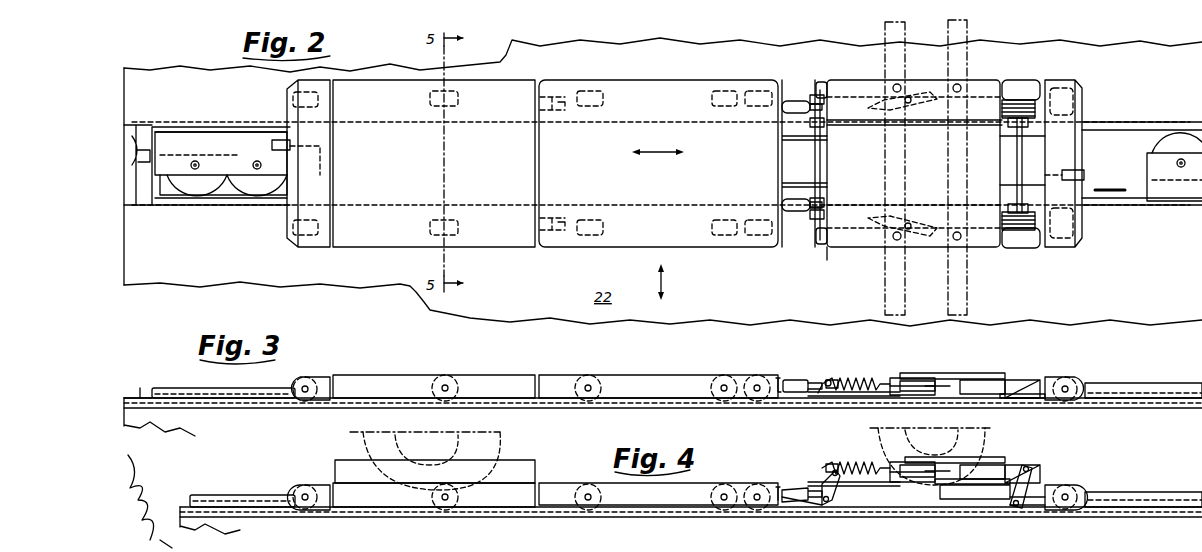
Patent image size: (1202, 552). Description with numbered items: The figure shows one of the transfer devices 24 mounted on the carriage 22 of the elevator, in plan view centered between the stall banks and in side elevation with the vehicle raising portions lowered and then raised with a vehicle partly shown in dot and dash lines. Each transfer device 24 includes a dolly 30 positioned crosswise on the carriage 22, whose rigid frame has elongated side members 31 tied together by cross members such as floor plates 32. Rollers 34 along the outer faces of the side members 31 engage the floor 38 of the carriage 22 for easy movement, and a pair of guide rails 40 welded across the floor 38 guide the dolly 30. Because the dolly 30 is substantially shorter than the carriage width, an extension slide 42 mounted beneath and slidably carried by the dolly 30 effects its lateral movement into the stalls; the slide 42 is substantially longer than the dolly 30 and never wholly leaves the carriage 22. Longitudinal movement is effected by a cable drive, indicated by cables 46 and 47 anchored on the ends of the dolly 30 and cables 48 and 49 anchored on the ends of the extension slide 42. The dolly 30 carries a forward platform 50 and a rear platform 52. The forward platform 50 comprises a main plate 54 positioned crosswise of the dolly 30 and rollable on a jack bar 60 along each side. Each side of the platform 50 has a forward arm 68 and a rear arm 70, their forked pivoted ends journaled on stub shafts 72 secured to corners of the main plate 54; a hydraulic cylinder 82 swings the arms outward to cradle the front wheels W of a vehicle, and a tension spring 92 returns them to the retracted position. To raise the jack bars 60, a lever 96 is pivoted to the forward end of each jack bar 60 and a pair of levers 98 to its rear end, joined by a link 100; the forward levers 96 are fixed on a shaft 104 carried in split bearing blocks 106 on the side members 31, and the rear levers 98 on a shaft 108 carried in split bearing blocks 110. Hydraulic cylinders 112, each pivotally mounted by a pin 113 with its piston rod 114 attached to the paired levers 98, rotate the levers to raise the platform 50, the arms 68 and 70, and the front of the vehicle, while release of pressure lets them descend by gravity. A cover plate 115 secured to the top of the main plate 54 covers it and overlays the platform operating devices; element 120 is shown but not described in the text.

In FIG. 2, the carriage 22 is at (162, 285).
In FIG. 3, the carriage 22 is at (162, 425).
In FIG. 2, the transfer device 24 is at (284, 254).
In FIG. 3, the transfer device 24 is at (367, 364).
In FIG. 4, the transfer device 24 is at (1122, 475).
In FIG. 2, the dolly 30 is at (312, 252).
In FIG. 3, the dolly 30 is at (672, 374).
In FIG. 4, the dolly 30 is at (577, 481).
In FIG. 2, the side member 31 is at (800, 127).
In FIG. 4, the side member 31 is at (1035, 505).
In FIG. 2, the floor plate 32 is at (300, 202).
In FIG. 3, the floor plate 32 is at (637, 377).
In FIG. 4, the floor plate 32 is at (668, 484).
In FIG. 2, the roller 34 is at (292, 100).
In FIG. 3, the roller 34 is at (312, 378).
In FIG. 4, the roller 34 is at (312, 487).
In FIG. 3, the floor 38 is at (226, 408).
In FIG. 4, the floor 38 is at (272, 518).
In FIG. 2, the guide rail 40 is at (134, 150).
In FIG. 3, the guide rail 40 is at (140, 388).
In FIG. 2, the extension slide 42 is at (217, 210).
In FIG. 3, the extension slide 42 is at (246, 384).
In FIG. 4, the extension slide 42 is at (246, 494).
In FIG. 2, the cable 46 is at (297, 164).
In FIG. 2, the cable 47 is at (1026, 192).
In FIG. 2, the cable 48 is at (183, 155).
In FIG. 2, the cable 49 is at (1188, 176).
In FIG. 2, the forward platform 50 is at (913, 163).
In FIG. 3, the forward platform 50 is at (944, 368).
In FIG. 4, the forward platform 50 is at (978, 455).
In FIG. 2, the rear platform 52 is at (434, 163).
In FIG. 3, the rear platform 52 is at (402, 372).
In FIG. 4, the rear platform 52 is at (414, 462).
In FIG. 2, the main plate 54 is at (868, 190).
In FIG. 3, the main plate 54 is at (908, 377).
In FIG. 4, the main plate 54 is at (915, 461).
In FIG. 2, the jack bar 60 is at (1010, 100).
In FIG. 3, the jack bar 60 is at (1002, 384).
In FIG. 4, the jack bar 60 is at (1012, 475).
In FIG. 2, the forward arm 68 is at (968, 26).
In FIG. 3, the forward arm 68 is at (1016, 398).
In FIG. 4, the forward arm 68 is at (966, 485).
In FIG. 2, the rear arm 70 is at (884, 24).
In FIG. 3, the rear arm 70 is at (852, 396).
In FIG. 4, the rear arm 70 is at (892, 488).
In FIG. 2, the stub shaft 72 is at (897, 84).
In FIG. 2, the hydraulic cylinder 82 is at (920, 92).
In FIG. 3, the hydraulic cylinder 82 is at (922, 380).
In FIG. 4, the hydraulic cylinder 82 is at (920, 480).
In FIG. 3, the tension spring 92 is at (850, 377).
In FIG. 4, the tension spring 92 is at (850, 462).
In FIG. 4, the lever 96 is at (1012, 510).
In FIG. 3, the lever 98 is at (829, 379).
In FIG. 4, the lever 98 is at (838, 502).
In FIG. 4, the link 100 is at (960, 500).
In FIG. 2, the shaft 104 is at (1016, 152).
In FIG. 2, the split bearing block 106 is at (1008, 124).
In FIG. 2, the shaft 108 is at (816, 165).
In FIG. 2, the split bearing block 110 is at (822, 125).
In FIG. 2, the hydraulic cylinder 112 is at (792, 100).
In FIG. 3, the hydraulic cylinder 112 is at (795, 380).
In FIG. 4, the hydraulic cylinder 112 is at (800, 504).
In FIG. 3, the pin 113 is at (779, 377).
In FIG. 4, the pin 113 is at (779, 486).
In FIG. 4, the piston rod 114 is at (813, 506).
In FIG. 2, the cover plate 115 is at (848, 248).
In FIG. 3, the cover plate 115 is at (984, 380).
In FIG. 4, the cover plate 115 is at (987, 470).
In FIG. 2, the clip 120 is at (555, 95).
In FIG. 4, the front wheel W is at (363, 440).